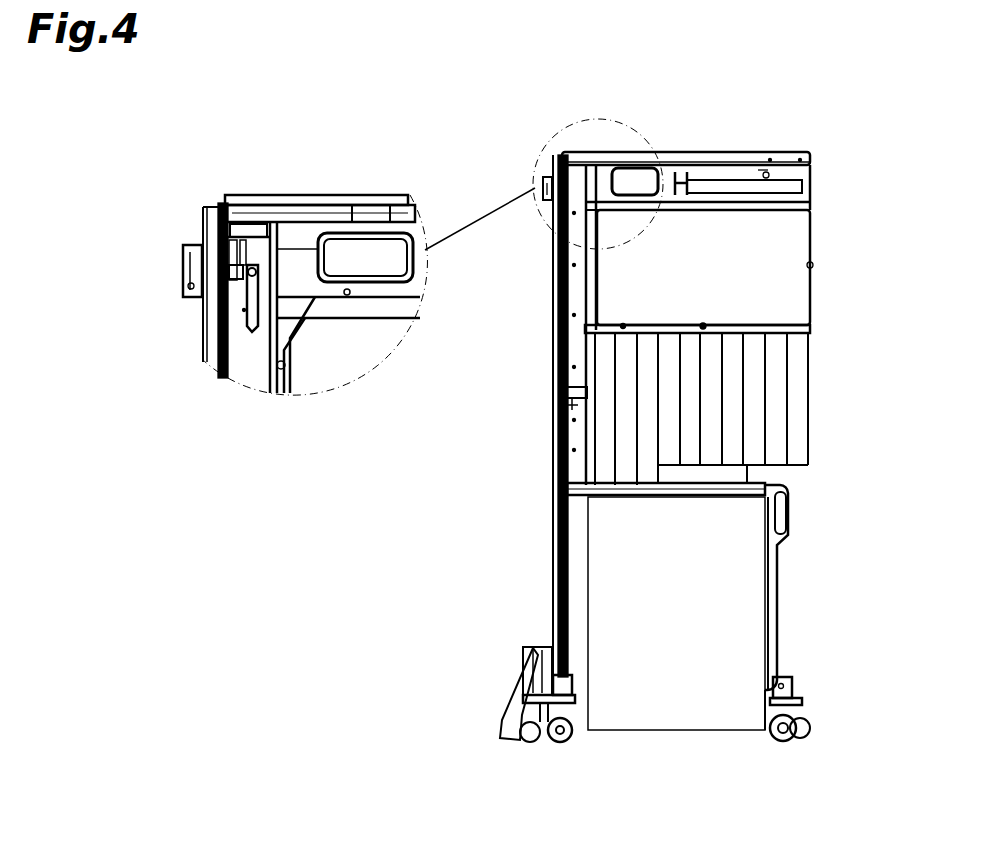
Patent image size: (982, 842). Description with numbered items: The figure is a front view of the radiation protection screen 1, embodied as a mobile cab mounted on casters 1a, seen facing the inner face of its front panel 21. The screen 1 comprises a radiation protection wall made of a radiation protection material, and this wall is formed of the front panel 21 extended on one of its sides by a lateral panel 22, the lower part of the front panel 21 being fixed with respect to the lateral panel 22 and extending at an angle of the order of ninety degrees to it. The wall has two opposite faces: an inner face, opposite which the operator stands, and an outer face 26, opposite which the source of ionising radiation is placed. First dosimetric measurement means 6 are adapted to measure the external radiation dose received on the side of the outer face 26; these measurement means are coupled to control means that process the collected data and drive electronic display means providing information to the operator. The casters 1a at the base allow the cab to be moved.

The screen 1 is at (833, 372).
The casters 1a is at (824, 717).
The first dosimetric measurement means 6 is at (528, 178).
The front panel 21 is at (818, 293).
The lateral panel 22 is at (547, 413).
The outer face 26 is at (548, 488).